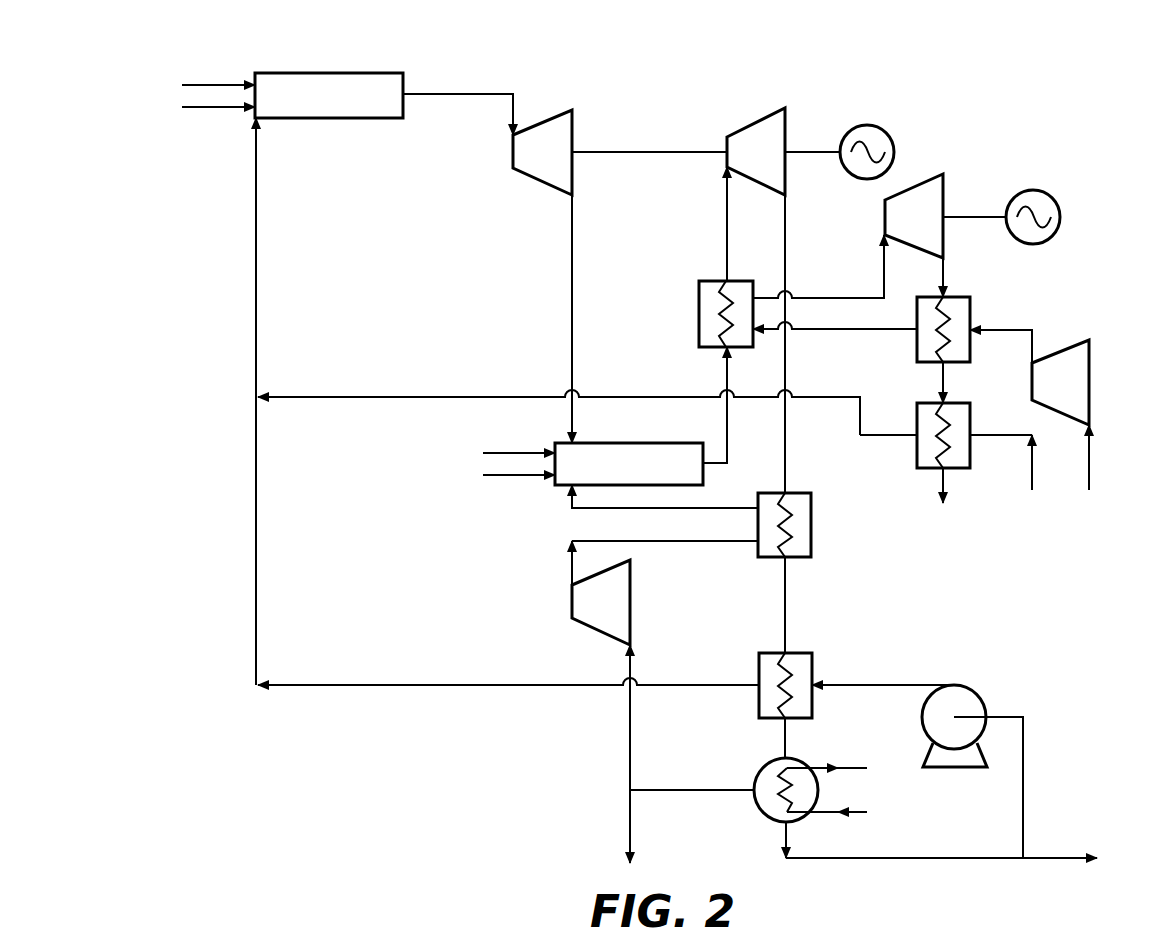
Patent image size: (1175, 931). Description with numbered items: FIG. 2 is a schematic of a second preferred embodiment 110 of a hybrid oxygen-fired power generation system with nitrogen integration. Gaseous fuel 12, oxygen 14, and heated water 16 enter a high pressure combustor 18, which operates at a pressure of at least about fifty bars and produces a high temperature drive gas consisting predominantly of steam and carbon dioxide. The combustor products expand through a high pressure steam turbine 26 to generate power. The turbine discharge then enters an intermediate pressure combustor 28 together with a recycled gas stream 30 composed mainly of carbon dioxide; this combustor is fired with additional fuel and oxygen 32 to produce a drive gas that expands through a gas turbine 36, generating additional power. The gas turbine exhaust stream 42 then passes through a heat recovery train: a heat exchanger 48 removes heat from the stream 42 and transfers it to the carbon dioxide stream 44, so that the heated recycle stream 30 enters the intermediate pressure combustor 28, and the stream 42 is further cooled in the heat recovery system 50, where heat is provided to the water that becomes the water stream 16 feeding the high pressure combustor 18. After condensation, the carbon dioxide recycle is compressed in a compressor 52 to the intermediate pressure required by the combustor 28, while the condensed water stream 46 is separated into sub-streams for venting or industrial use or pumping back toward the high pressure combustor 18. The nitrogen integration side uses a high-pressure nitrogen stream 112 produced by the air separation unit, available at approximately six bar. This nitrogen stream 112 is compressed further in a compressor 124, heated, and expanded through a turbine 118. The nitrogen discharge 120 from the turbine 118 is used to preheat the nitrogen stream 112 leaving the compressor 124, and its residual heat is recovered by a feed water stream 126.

The gaseous fuel 12 is at (200, 82).
The oxygen 14 is at (200, 110).
The high pressure combustor 18 is at (343, 119).
The high pressure steam turbine 26 is at (552, 115).
The intermediate pressure combustor 28 is at (650, 443).
The recycled gas stream 30 is at (585, 509).
The additional fuel and oxygen 32 is at (502, 475).
The gas turbine 36 is at (760, 118).
The stream 42 is at (788, 598).
The CO2 stream 44 is at (650, 541).
The water stream 46 is at (845, 858).
The heat exchanger 48 is at (960, 467).
The heat recovery system 50 is at (800, 653).
The compressor 52 is at (590, 635).
The water 16 is at (256, 545).
The second preferred embodiment 110 is at (937, 77).
The high-pressure nitrogen stream 112 is at (1089, 483).
The turbine 118 is at (922, 183).
The nitrogen discharge 120 is at (945, 268).
The compressor 124 is at (1072, 345).
The feed water stream 126 is at (636, 396).